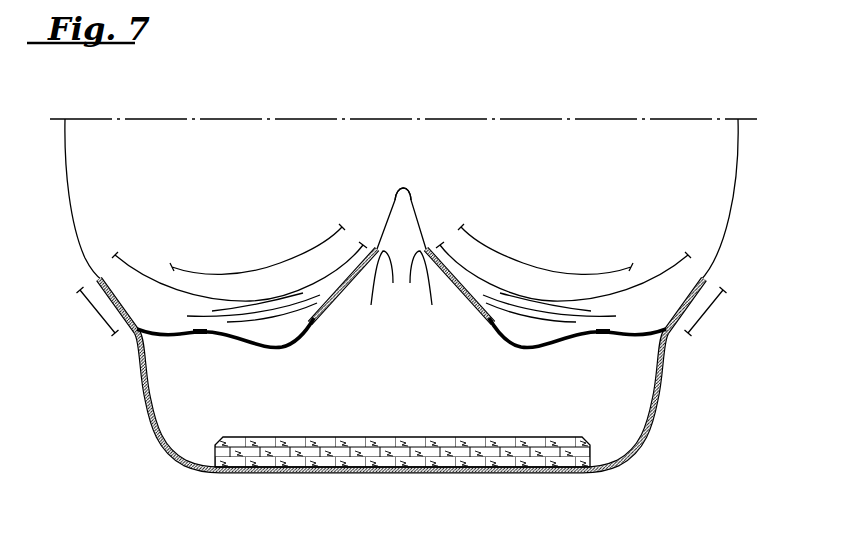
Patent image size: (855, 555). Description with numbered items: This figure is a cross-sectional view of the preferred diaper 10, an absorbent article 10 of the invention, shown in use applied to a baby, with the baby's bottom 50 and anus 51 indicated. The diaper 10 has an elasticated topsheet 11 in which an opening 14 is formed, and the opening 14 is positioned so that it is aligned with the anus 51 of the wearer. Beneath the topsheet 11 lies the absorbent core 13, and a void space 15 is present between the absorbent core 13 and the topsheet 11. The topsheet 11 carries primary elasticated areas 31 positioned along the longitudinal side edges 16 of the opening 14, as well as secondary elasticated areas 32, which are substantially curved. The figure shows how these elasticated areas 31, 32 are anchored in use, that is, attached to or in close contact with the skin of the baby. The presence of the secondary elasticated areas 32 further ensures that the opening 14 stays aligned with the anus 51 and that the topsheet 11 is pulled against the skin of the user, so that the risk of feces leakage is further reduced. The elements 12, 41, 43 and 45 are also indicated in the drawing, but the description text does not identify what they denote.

The absorbent article 10 is at (733, 407).
The topsheet 11 is at (175, 338).
The lower band 12 is at (619, 469).
The absorbent core 13 is at (417, 473).
The opening 14 is at (397, 220).
The void space 15 is at (226, 416).
The longitudinal side edges 16 is at (401, 280).
The primary elasticated areas 31 is at (360, 275).
The secondary elasticated areas 32 is at (204, 340).
The upper cup portion 41 is at (134, 268).
The side portion 43 is at (93, 307).
The cup section 45 is at (247, 273).
The bottom 50 is at (643, 137).
The anus 51 is at (411, 200).